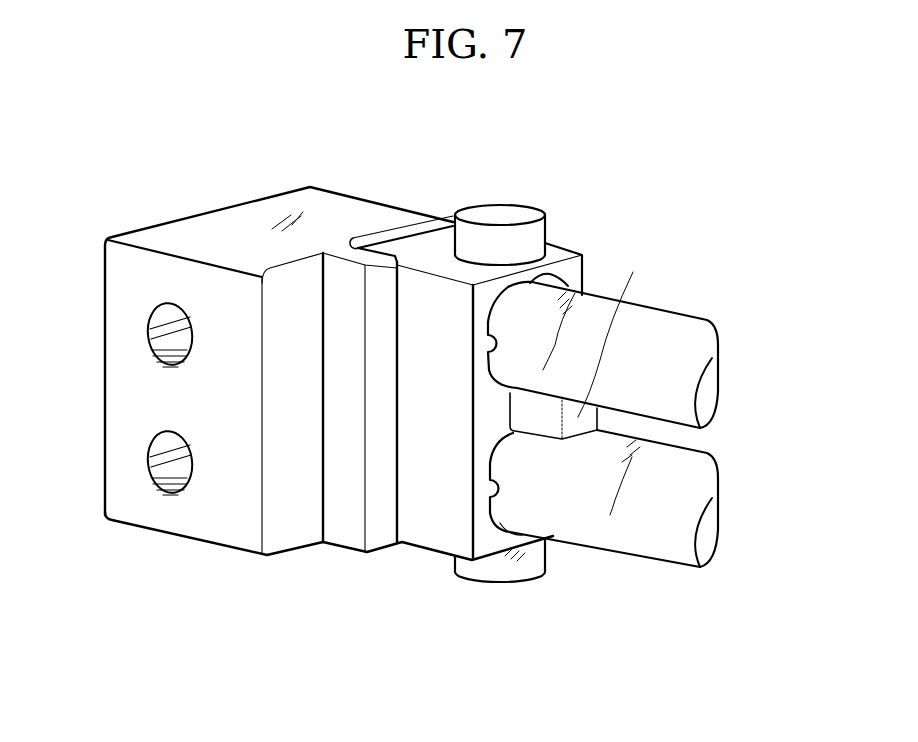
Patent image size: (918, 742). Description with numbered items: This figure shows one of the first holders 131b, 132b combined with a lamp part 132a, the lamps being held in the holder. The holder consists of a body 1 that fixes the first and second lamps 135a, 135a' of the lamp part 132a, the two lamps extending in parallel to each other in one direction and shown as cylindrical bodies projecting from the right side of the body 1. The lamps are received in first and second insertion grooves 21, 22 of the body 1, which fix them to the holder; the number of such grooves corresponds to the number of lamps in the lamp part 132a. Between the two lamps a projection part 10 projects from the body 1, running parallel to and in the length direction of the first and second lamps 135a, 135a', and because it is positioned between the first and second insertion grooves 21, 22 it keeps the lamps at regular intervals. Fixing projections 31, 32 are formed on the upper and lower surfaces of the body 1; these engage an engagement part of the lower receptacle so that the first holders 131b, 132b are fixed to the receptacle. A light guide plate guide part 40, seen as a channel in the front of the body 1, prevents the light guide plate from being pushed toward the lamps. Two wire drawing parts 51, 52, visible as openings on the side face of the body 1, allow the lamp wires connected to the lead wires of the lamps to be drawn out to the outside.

The body 1 is at (222, 222).
The projection part 10 is at (633, 272).
The first insertion groove 21 is at (550, 272).
The second insertion groove 22 is at (529, 546).
The fixing projection 31 is at (498, 212).
The fixing projection 32 is at (492, 578).
The light guide plate guide part 40 is at (345, 530).
The wire drawing part 51 is at (148, 322).
The wire drawing part 52 is at (148, 452).
The first lamp 135a is at (654, 355).
The second lamp 135a' is at (658, 498).
The lamp part 132a is at (833, 347).
The first holder 131b is at (806, 171).
The first holder 132b is at (770, 158).